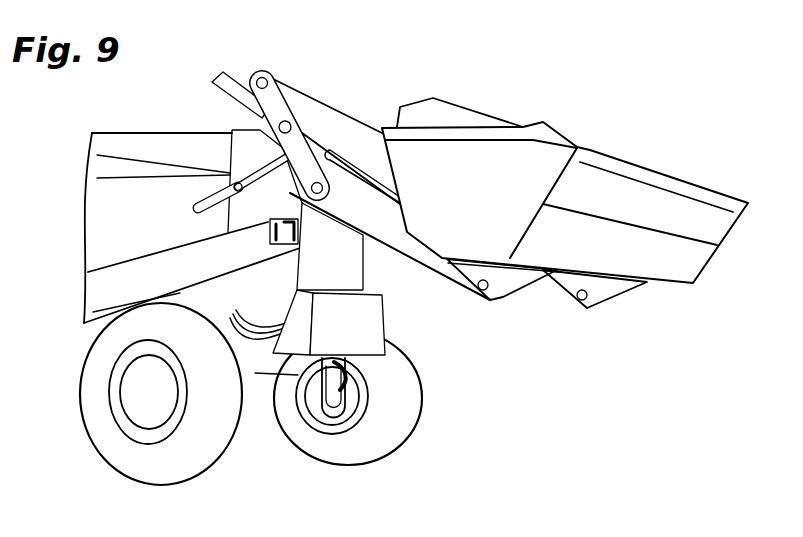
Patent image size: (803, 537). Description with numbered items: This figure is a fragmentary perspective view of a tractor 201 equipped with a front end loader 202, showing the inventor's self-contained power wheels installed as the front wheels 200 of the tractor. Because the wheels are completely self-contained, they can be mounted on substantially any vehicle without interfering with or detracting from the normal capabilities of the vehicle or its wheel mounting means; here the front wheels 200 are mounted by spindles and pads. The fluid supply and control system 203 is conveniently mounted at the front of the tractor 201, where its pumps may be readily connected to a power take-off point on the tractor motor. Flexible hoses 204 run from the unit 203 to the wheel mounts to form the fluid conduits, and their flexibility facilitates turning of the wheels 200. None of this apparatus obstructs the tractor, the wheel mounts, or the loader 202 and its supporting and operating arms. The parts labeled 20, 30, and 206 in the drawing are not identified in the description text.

The steering knuckle / hub 20 is at (333, 427).
The wheel rim hub 30 is at (355, 400).
The front wheels 200 is at (172, 486).
The tractor 201 is at (143, 128).
The front end loader 202 is at (645, 170).
The fluid supply and control system 203 is at (368, 326).
The flexible hoses 204 is at (250, 325).
The bucket mounting brackets 206 is at (503, 280).